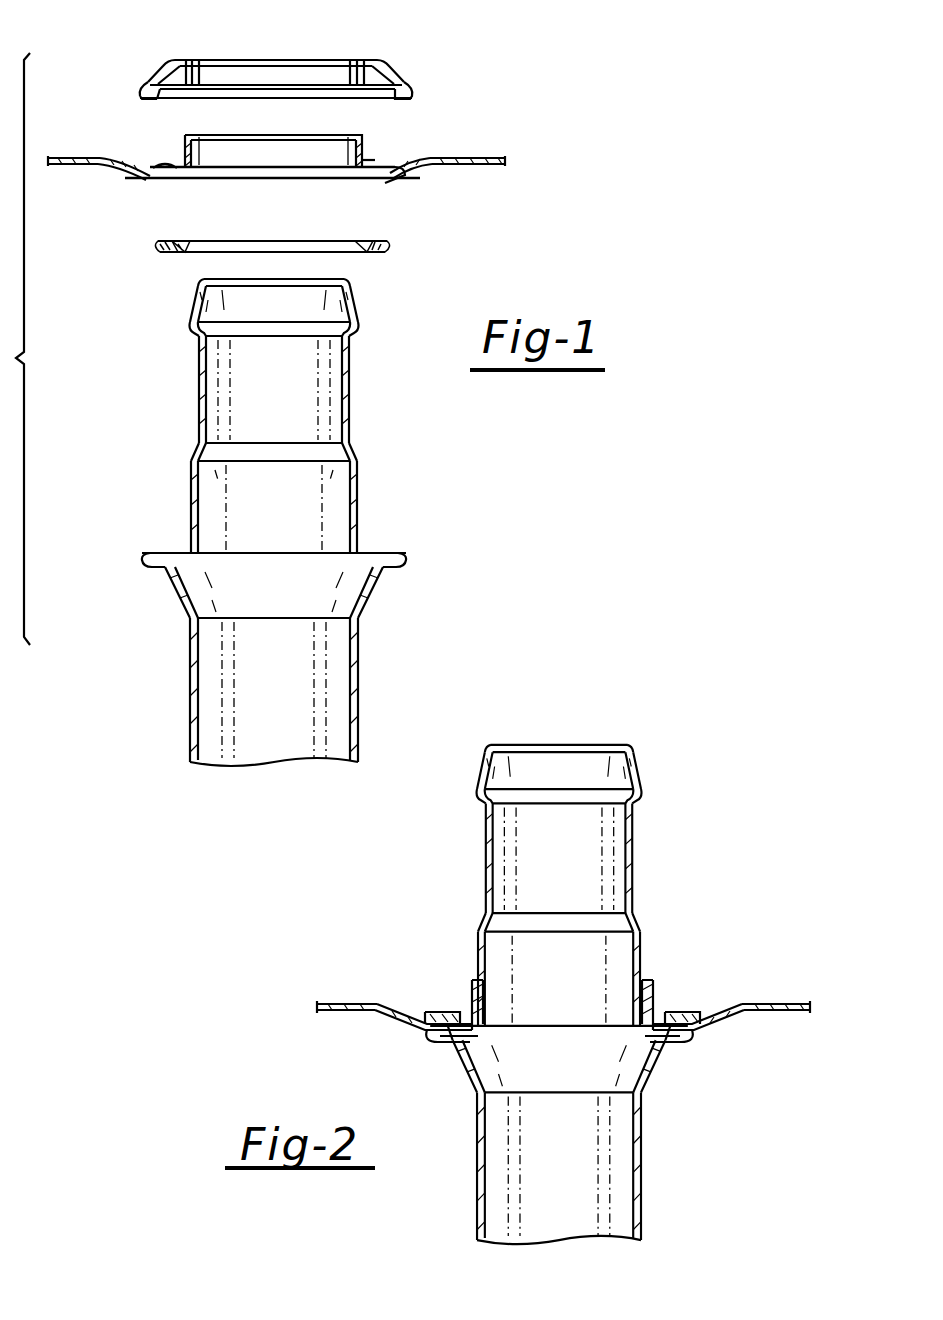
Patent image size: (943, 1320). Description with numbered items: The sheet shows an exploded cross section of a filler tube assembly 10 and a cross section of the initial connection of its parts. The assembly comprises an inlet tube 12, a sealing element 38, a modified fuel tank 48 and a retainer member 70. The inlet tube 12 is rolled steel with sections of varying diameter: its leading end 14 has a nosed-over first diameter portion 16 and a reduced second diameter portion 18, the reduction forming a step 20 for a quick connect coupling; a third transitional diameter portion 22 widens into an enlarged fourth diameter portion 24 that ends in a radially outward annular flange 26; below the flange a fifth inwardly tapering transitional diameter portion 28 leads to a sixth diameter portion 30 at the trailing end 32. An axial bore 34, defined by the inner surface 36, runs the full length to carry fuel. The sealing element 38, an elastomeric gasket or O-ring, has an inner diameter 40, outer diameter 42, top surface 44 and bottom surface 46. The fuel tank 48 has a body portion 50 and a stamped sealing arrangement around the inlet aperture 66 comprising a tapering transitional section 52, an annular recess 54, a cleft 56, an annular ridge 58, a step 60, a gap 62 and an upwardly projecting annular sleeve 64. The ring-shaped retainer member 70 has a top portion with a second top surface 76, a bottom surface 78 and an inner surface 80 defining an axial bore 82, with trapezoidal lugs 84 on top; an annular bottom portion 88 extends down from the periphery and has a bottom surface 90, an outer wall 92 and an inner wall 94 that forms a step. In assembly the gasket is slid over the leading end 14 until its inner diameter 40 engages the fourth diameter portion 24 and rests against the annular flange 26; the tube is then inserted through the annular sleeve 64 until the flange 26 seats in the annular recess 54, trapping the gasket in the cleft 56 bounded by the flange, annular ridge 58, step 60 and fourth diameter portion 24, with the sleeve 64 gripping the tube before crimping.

In FIG. 1, the filler tube assembly 10 is at (15, 349).
In FIG. 1, the inlet tube 12 is at (312, 535).
In FIG. 1, the leading end 14 is at (332, 282).
In FIG. 2, the leading end 14 is at (616, 752).
In FIG. 1, the first diameter portion 16 is at (354, 308).
In FIG. 2, the first diameter portion 16 is at (638, 775).
In FIG. 1, the second diameter portion 18 is at (350, 380).
In FIG. 2, the second diameter portion 18 is at (633, 850).
In FIG. 1, the step 20 is at (358, 332).
In FIG. 2, the step 20 is at (642, 802).
In FIG. 1, the third transitional diameter portion 22 is at (356, 452).
In FIG. 2, the third transitional diameter portion 22 is at (636, 928).
In FIG. 1, the fourth diameter portion 24 is at (358, 498).
In FIG. 2, the fourth diameter portion 24 is at (641, 962).
In FIG. 1, the annular flange 26 is at (398, 553).
In FIG. 2, the annular flange 26 is at (668, 1045).
In FIG. 1, the fifth inwardly tapering transitional diameter portion 28 is at (356, 598).
In FIG. 2, the fifth inwardly tapering transitional diameter portion 28 is at (656, 1082).
In FIG. 1, the sixth diameter portion 30 is at (362, 700).
In FIG. 2, the sixth diameter portion 30 is at (643, 1212).
In FIG. 1, the trailing end 32 is at (358, 765).
In FIG. 2, the trailing end 32 is at (640, 1242).
In FIG. 1, the axial bore 34 is at (274, 524).
In FIG. 2, the axial bore 34 is at (558, 996).
In FIG. 1, the inner surface 36 is at (214, 553).
In FIG. 1, the sealing element 38 is at (277, 247).
In FIG. 2, the sealing element 38 is at (680, 1038).
In FIG. 1, the inner diameter 40 is at (190, 243).
In FIG. 1, the outer diameter 42 is at (160, 246).
In FIG. 1, the top surface 44 is at (176, 243).
In FIG. 1, the bottom surface 46 is at (172, 254).
In FIG. 1, the fuel tank 48 is at (308, 158).
In FIG. 1, the body portion 50 is at (500, 166).
In FIG. 2, the body portion 50 is at (790, 1003).
In FIG. 1, the tapering transitional section 52 is at (420, 178).
In FIG. 2, the tapering transitional section 52 is at (716, 1027).
In FIG. 1, the annular recess 54 is at (406, 178).
In FIG. 2, the annular recess 54 is at (705, 1012).
In FIG. 1, the cleft 56 is at (376, 178).
In FIG. 1, the annular ridge 58 is at (386, 161).
In FIG. 2, the annular ridge 58 is at (446, 1008).
In FIG. 1, the step 60 is at (408, 166).
In FIG. 2, the step 60 is at (448, 1044).
In FIG. 1, the gap 62 is at (440, 161).
In FIG. 2, the gap 62 is at (400, 1006).
In FIG. 1, the annular sleeve 64 is at (362, 152).
In FIG. 2, the annular sleeve 64 is at (656, 990).
In FIG. 1, the inlet aperture 66 is at (273, 152).
In FIG. 1, the retainer member 70 is at (291, 78).
In FIG. 1, the second top surface 76 is at (396, 84).
In FIG. 1, the bottom surface 78 is at (410, 99).
In FIG. 1, the inner surface 80 is at (196, 82).
In FIG. 1, the axial bore 82 is at (268, 72).
In FIG. 2, the lugs 84 is at (690, 1004).
In FIG. 1, the annular bottom portion 88 is at (140, 98).
In FIG. 2, the annular bottom portion 88 is at (432, 1038).
In FIG. 1, the bottom surface 90 is at (152, 104).
In FIG. 1, the outer wall 92 is at (152, 86).
In FIG. 1, the inner wall 94 is at (154, 98).